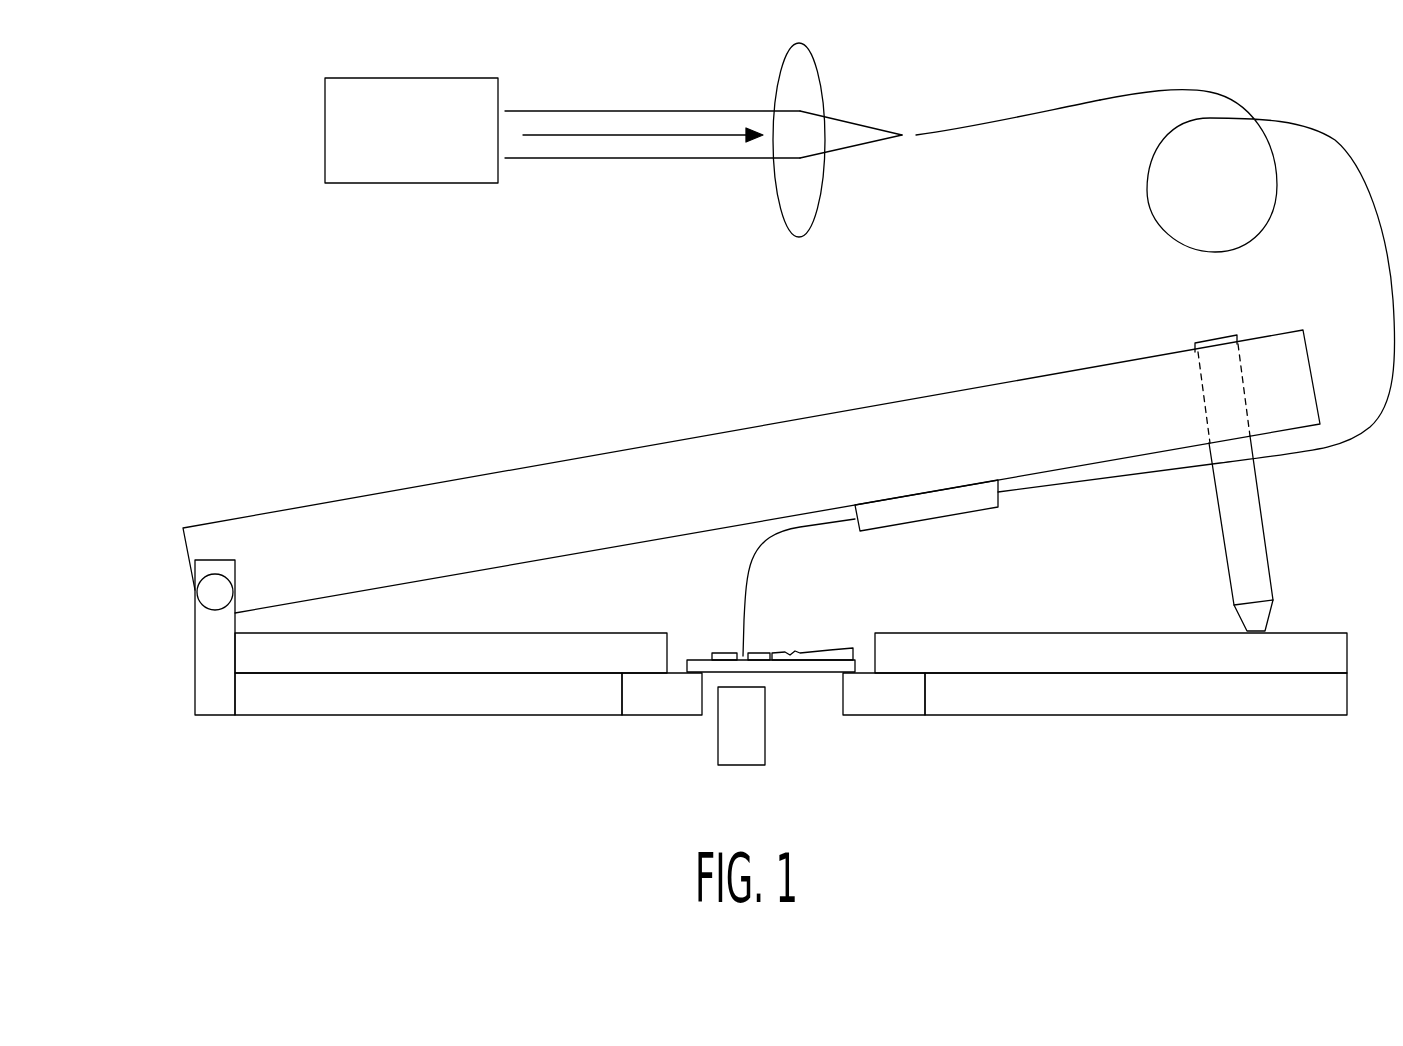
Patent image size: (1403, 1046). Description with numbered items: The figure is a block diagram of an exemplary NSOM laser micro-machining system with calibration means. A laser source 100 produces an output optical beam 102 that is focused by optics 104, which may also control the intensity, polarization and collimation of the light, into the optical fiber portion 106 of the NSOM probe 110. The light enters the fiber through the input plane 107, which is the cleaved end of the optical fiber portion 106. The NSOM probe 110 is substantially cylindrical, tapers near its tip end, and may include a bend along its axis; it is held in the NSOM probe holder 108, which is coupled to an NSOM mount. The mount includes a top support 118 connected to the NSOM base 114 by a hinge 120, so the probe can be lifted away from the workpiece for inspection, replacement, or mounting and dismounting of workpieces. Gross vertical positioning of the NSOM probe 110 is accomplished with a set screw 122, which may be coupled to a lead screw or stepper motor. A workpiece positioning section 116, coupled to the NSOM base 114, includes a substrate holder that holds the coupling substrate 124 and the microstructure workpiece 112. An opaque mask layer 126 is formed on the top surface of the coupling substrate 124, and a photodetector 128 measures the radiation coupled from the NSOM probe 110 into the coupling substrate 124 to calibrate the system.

The laser source 100 is at (325, 163).
The optical beam 102 is at (622, 120).
The optics 104 is at (817, 60).
The optical fiber portion 106 is at (1323, 137).
The input plane 107 is at (913, 130).
The NSOM probe holder 108 is at (893, 497).
The NSOM probe 110 is at (740, 585).
The microstructure workpiece 112 is at (818, 650).
The NSOM base 114 is at (528, 717).
The workpiece positioning section 116 is at (642, 717).
The top support 118 is at (723, 427).
The hinge 120 is at (207, 592).
The set screw 122 is at (1203, 403).
The coupling substrate 124 is at (793, 677).
The opaque mask layer 126 is at (762, 653).
The photodetector 128 is at (717, 752).